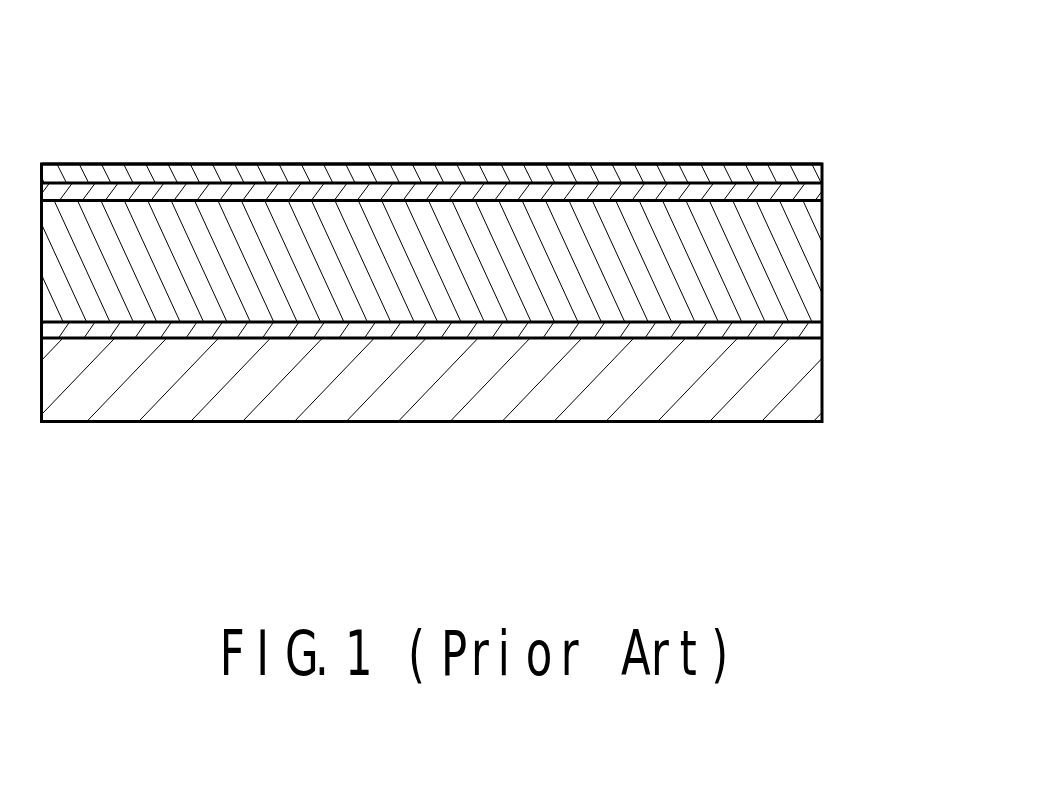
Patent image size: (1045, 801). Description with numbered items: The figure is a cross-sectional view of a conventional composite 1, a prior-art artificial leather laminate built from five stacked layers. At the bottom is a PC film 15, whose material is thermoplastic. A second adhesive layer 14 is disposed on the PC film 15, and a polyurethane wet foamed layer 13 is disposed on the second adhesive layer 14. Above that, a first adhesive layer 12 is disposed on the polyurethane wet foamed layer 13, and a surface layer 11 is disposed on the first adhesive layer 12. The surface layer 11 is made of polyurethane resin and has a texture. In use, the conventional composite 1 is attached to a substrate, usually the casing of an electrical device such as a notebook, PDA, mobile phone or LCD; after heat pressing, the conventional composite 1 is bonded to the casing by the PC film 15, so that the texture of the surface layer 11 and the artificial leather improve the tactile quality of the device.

The conventional composite 1 is at (836, 135).
The surface layer 11 is at (823, 172).
The first adhesive layer 12 is at (810, 192).
The polyurethane wet foamed layer 13 is at (810, 262).
The second adhesive layer 14 is at (810, 332).
The PC film 15 is at (810, 392).